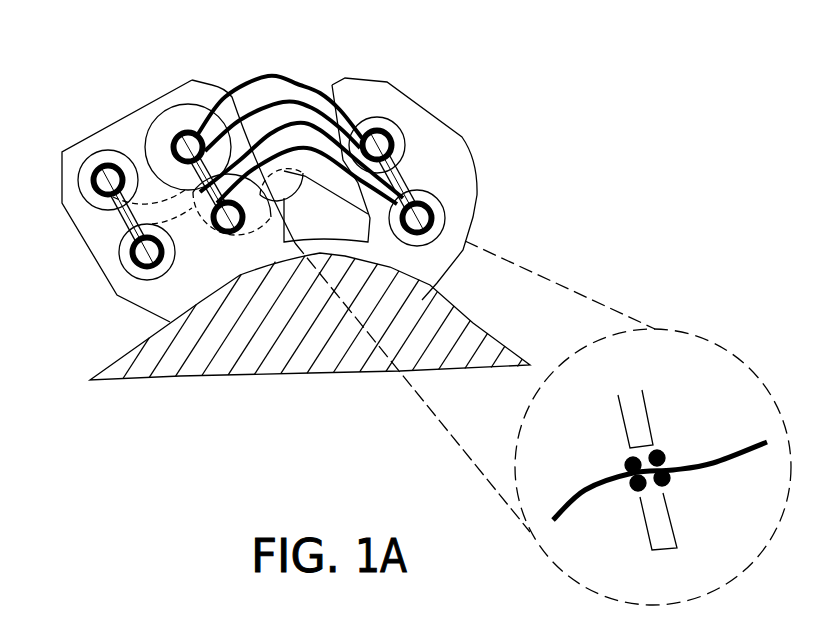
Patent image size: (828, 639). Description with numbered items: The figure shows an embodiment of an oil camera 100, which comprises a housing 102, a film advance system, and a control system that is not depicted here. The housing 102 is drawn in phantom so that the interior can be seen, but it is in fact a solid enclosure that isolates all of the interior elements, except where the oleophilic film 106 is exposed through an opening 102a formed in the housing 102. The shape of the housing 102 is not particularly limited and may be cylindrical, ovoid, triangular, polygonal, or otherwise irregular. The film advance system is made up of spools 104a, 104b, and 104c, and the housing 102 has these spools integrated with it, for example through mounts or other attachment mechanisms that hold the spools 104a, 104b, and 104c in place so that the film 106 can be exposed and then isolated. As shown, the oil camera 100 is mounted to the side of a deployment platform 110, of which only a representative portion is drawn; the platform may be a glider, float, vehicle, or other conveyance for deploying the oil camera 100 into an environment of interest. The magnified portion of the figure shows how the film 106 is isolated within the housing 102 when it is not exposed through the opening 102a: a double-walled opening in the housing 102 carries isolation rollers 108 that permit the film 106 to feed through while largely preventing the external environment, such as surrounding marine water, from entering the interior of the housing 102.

The oil camera 100 is at (468, 48).
The housing 102 is at (470, 152).
The opening 102a is at (300, 62).
The spool 104a is at (444, 206).
The spool 104b is at (167, 103).
The spool 104c is at (122, 266).
The oleophilic film 106 is at (265, 73).
The isolation rollers 108 is at (626, 459).
The deployment platform 110 is at (133, 347).